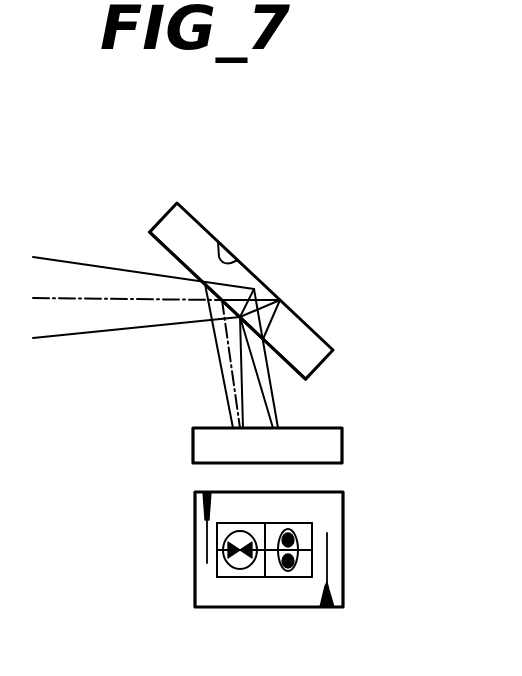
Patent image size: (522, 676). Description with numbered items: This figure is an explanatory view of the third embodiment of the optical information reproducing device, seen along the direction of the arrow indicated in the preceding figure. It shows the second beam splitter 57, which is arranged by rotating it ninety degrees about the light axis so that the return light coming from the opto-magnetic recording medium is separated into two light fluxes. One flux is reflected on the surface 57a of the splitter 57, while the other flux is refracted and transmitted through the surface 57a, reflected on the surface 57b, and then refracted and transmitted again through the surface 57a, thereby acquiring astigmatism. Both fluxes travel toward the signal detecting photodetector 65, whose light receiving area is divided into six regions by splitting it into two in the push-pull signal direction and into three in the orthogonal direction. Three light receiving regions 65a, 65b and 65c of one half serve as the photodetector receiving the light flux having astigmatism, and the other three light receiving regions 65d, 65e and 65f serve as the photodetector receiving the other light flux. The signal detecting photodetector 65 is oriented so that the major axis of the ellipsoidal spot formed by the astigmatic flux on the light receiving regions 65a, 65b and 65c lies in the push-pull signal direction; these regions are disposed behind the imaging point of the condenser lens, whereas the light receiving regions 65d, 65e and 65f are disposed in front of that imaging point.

The second beam splitter 57 is at (208, 231).
The surface of the splitter 57a is at (161, 242).
The surface of the splitter 57b is at (239, 257).
The signal detecting photodetector 65 is at (343, 442).
The light receiving region 65a is at (305, 530).
The light receiving region 65b is at (312, 550).
The light receiving region 65c is at (312, 568).
The light receiving region 65d is at (217, 568).
The light receiving region 65e is at (217, 547).
The light receiving region 65f is at (207, 522).